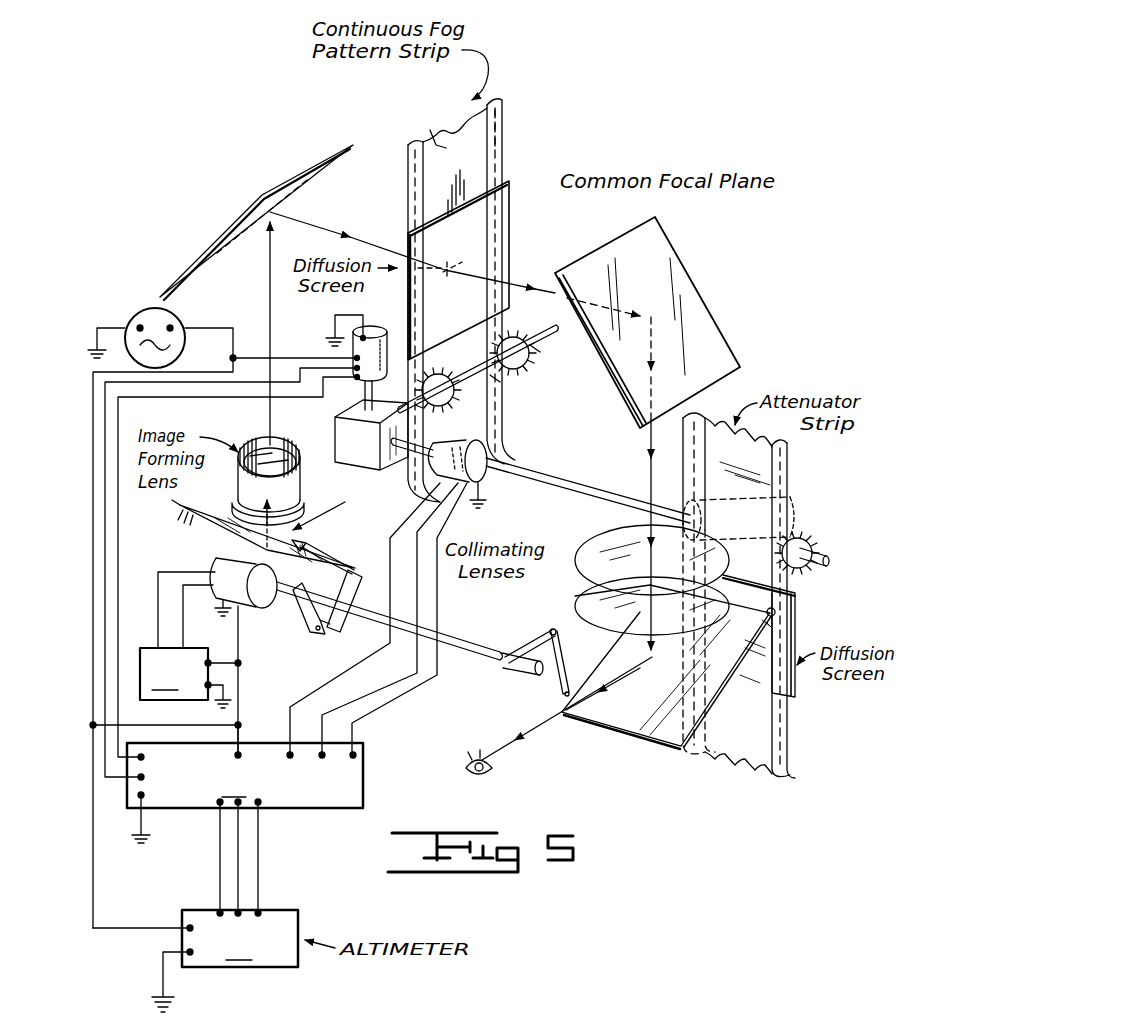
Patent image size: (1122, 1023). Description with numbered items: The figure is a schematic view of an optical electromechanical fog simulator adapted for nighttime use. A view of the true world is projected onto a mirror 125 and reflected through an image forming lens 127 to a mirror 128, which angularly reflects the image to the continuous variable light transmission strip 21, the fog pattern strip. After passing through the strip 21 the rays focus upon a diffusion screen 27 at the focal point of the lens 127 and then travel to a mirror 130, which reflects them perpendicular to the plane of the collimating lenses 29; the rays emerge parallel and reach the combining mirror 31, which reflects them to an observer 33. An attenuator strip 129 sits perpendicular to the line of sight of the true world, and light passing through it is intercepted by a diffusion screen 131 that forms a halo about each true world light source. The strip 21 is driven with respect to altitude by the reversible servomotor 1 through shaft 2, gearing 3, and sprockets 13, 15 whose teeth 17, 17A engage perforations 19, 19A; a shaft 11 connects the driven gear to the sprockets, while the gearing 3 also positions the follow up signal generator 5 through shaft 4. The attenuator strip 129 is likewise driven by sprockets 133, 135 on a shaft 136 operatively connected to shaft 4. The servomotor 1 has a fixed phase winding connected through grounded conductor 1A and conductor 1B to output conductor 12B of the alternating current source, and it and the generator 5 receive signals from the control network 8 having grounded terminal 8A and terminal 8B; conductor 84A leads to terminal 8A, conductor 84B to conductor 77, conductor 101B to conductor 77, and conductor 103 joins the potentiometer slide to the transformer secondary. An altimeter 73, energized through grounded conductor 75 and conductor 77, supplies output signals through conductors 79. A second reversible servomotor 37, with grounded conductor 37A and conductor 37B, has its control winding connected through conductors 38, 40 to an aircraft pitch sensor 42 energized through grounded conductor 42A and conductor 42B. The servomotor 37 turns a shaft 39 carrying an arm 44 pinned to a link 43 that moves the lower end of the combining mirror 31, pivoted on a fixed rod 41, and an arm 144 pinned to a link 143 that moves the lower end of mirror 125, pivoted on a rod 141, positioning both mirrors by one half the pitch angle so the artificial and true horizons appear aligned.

The reversible servomotor 1 is at (370, 333).
The grounded conductor 1A is at (343, 312).
The conductor 1B is at (302, 334).
The shaft 2 is at (364, 398).
The gearing 3 is at (345, 472).
The shaft 4 is at (418, 434).
The follow up signal generator 5 is at (486, 445).
The control network 8 is at (245, 775).
The grounded terminal 8A is at (148, 830).
The terminal 8B is at (232, 755).
The shaft 11 is at (480, 388).
The output conductor 12B is at (197, 370).
The sprocket 13 is at (445, 375).
The sprocket 15 is at (524, 373).
The teeth 17 is at (420, 385).
The teeth 17A is at (530, 353).
The perforations 19 is at (413, 198).
The perforations 19A is at (500, 140).
The continuous variable light transmission strip 21 is at (440, 135).
The diffusion screen 27 is at (509, 190).
The collimating lenses 29 is at (585, 540).
The combining mirror 31 is at (610, 740).
The observer 33 is at (472, 777).
The reversible servomotor 37 is at (243, 608).
The grounded conductor 37A is at (223, 600).
The conductor 37B is at (240, 658).
The conductor 38 is at (157, 620).
The shaft 39 is at (472, 645).
The conductor 40 is at (188, 622).
The rod 41 is at (777, 611).
The aircraft pitch sensor 42 is at (175, 674).
The grounded conductor 42A is at (226, 700).
The conductor 42B is at (222, 668).
The link 43 is at (566, 670).
The arm 44 is at (532, 642).
The altimeter 73 is at (240, 938).
The grounded conductor 75 is at (170, 988).
The conductor 77 is at (120, 925).
The conductors 79 is at (258, 852).
The conductor 84A is at (480, 497).
The conductor 84B is at (382, 703).
The conductor 101B is at (395, 673).
The conductor 103 is at (345, 690).
The mirror 125 is at (212, 532).
The image forming lens 127 is at (248, 481).
The mirror 128 is at (242, 221).
The attenuator strip 129 is at (795, 462).
The mirror 130 is at (685, 260).
The diffusion screen 131 is at (797, 680).
The sprocket 133 is at (815, 545).
The sprocket 135 is at (792, 504).
The shaft 136 is at (557, 478).
The rod 141 is at (183, 503).
The link 143 is at (350, 600).
The arm 144 is at (310, 624).